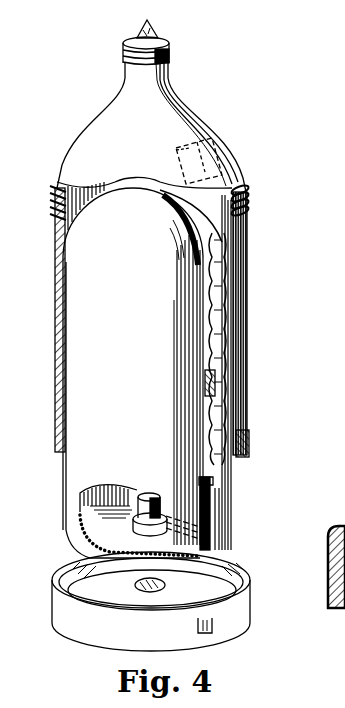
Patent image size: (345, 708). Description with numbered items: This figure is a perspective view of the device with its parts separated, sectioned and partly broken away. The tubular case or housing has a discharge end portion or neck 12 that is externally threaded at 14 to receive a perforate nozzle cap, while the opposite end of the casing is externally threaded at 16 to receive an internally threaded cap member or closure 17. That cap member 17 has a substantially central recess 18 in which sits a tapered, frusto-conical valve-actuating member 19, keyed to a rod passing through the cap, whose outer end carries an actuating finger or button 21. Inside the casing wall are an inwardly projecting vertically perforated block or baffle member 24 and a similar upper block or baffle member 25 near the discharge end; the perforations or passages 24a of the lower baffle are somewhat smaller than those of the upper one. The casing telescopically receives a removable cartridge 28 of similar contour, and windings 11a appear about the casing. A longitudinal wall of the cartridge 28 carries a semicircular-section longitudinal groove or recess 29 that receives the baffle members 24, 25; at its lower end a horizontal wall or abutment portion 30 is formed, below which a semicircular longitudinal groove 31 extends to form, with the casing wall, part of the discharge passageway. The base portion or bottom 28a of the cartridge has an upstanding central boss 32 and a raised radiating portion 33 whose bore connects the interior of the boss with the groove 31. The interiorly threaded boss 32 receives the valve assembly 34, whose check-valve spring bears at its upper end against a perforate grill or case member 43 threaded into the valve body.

The external threads 14 is at (168, 52).
The discharge end portion or neck 12 is at (170, 72).
The upper block or baffle member 25 is at (223, 142).
The cord windings 11a is at (53, 206).
The cartridge 28 is at (129, 251).
The perforations or passages 24a is at (194, 350).
The block or baffle member 24 is at (194, 377).
The longitudinally extending groove or recess 29 is at (192, 403).
The external threads 16 is at (249, 446).
The horizontal wall or abutment portion 30 is at (238, 476).
The semicircular longitudinal groove 31 is at (238, 505).
The perforate grill or case member 43 is at (143, 496).
The valve assembly 34 is at (155, 497).
The base portion or bottom 28a is at (80, 513).
The boss 32 is at (136, 525).
The raised outwardly extending or radiating portion 33 is at (176, 531).
The recess 18 is at (135, 585).
The valve-actuating member 19 is at (165, 585).
The cap member or closure 17 is at (83, 618).
The actuating finger or button 21 is at (212, 628).